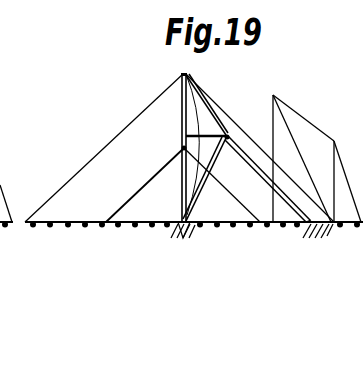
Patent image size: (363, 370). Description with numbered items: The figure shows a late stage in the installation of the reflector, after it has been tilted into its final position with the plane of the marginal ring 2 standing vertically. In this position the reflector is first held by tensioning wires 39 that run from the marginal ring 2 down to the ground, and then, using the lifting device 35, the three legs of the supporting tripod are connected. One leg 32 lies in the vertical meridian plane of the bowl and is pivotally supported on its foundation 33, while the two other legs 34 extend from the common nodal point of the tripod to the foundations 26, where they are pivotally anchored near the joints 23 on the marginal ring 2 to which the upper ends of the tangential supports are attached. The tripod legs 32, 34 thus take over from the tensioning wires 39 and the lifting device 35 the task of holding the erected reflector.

The marginal ring 2 is at (181, 135).
The joints 23 is at (172, 158).
The foundations 26 is at (183, 239).
The leg 32 is at (272, 181).
The foundation 33 is at (320, 238).
The legs 34 is at (195, 207).
The lifting device 35 is at (330, 136).
The tensioning wires 39 is at (128, 127).